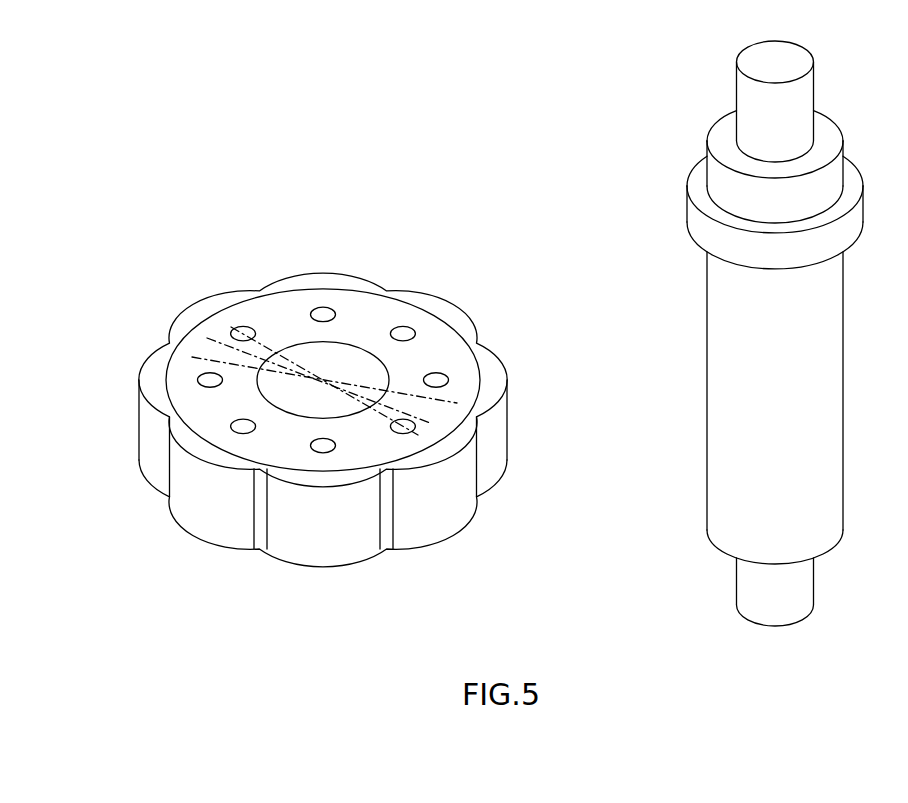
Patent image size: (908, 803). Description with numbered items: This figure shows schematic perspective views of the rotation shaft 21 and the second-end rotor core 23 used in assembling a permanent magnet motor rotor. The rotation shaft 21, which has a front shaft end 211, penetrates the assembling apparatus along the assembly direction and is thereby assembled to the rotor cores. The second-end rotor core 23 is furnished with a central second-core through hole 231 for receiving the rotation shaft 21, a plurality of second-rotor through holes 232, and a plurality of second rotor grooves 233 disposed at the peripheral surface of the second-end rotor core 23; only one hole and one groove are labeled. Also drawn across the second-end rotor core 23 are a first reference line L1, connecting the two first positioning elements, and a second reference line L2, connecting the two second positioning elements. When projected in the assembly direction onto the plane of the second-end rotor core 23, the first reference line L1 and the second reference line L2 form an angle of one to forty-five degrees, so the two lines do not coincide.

The rotation shaft 21 is at (832, 392).
The front shaft end 211 is at (806, 585).
The second-end rotor core 23 is at (147, 434).
The second-core through hole 231 is at (352, 344).
The second-rotor through holes 232 is at (317, 306).
The second rotor grooves 233 is at (261, 530).
The first reference line L1 is at (432, 428).
The second reference line L2 is at (458, 405).